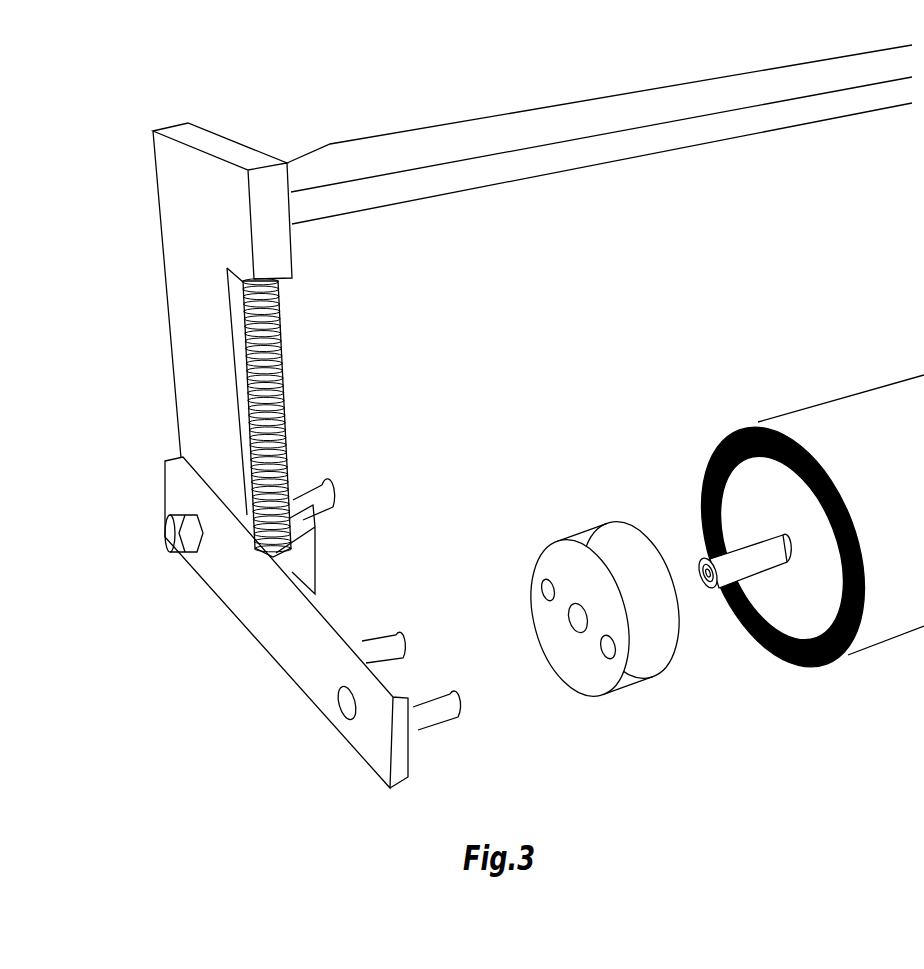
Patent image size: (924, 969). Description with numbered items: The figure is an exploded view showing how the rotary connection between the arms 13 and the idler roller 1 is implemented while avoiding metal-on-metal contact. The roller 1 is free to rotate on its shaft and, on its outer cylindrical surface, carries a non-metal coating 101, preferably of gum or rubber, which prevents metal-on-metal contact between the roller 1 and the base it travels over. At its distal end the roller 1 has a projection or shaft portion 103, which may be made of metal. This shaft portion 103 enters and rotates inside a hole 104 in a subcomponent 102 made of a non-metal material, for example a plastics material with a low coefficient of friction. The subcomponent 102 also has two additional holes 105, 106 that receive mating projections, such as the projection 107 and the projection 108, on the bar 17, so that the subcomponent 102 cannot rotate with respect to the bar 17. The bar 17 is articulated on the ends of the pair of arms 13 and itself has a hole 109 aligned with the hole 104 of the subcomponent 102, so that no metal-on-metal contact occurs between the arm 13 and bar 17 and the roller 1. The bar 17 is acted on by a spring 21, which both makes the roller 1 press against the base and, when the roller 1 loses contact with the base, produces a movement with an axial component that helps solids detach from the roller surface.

The idler roller 1 is at (785, 487).
The arm 13 is at (187, 235).
The bar 17 is at (253, 593).
The spring 21 is at (285, 357).
The non-metal coating 101 is at (723, 460).
The subcomponent 102 is at (645, 662).
The shaft portion 103 is at (727, 568).
The hole 104 is at (578, 622).
The additional hole 105 is at (607, 652).
The additional hole 106 is at (548, 596).
The mating projection 107 is at (387, 640).
The pin 108 is at (443, 703).
The hole 109 is at (343, 704).